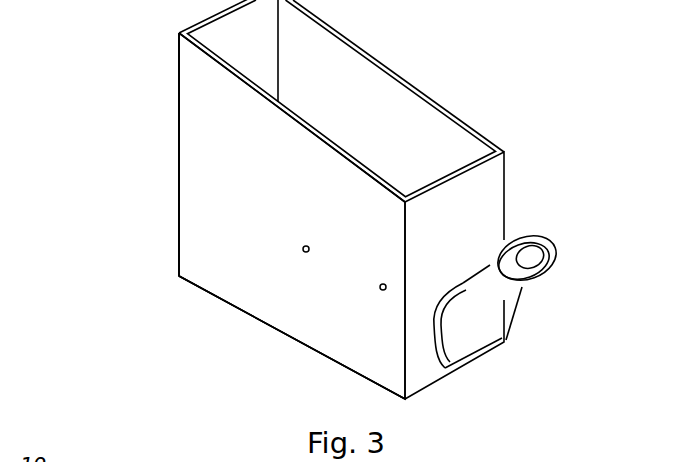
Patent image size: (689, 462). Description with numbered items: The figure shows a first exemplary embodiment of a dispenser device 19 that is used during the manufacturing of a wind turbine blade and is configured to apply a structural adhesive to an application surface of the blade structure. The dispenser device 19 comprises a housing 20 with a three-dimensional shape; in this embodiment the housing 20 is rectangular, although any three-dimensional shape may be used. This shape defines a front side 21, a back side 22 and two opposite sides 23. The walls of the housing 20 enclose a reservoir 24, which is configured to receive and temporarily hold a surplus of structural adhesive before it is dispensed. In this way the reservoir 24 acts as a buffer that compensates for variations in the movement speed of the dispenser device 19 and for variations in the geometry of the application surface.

The dispenser device 19 is at (89, 54).
The housing 20 is at (207, 211).
The front side 21 is at (156, 129).
The back side 22 is at (472, 221).
The opposite sides 23 is at (274, 308).
The reservoir 24 is at (408, 101).